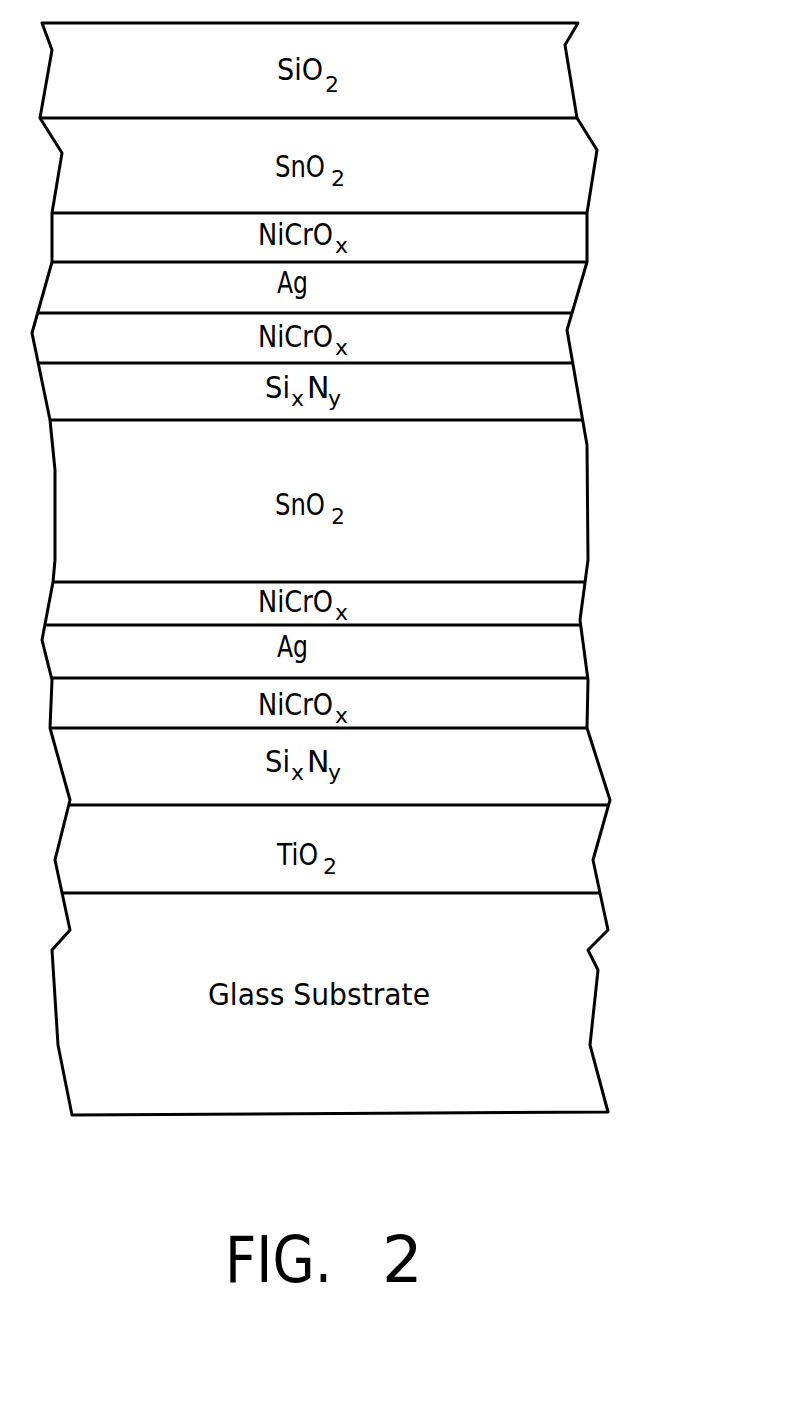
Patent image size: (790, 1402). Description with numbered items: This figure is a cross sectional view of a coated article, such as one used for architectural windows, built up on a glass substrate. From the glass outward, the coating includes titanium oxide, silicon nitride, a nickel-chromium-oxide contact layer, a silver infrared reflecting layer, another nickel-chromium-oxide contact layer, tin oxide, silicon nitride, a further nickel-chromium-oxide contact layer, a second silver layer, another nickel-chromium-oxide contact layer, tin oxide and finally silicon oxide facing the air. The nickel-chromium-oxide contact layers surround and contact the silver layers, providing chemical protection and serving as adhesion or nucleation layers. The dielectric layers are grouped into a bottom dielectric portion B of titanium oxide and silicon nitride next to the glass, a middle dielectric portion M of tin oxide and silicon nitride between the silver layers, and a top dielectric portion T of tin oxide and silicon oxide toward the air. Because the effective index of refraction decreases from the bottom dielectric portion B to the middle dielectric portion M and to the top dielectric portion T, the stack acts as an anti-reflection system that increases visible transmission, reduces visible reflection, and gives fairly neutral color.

The top dielectric portion T is at (627, 17).
The middle dielectric portion M is at (627, 363).
The bottom dielectric portion B is at (627, 725).